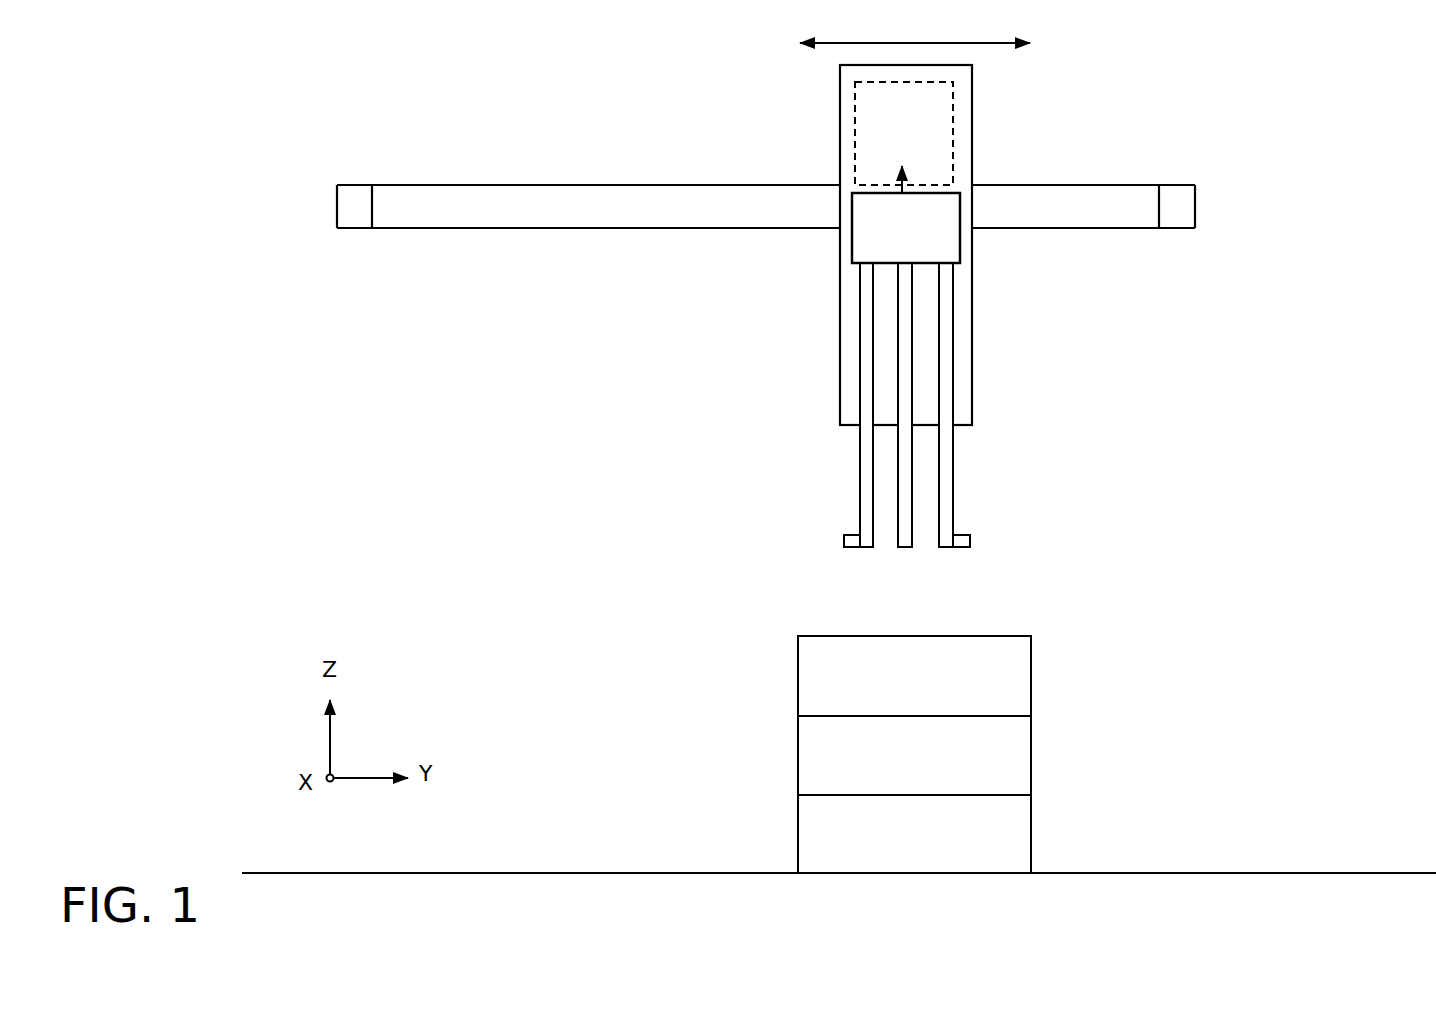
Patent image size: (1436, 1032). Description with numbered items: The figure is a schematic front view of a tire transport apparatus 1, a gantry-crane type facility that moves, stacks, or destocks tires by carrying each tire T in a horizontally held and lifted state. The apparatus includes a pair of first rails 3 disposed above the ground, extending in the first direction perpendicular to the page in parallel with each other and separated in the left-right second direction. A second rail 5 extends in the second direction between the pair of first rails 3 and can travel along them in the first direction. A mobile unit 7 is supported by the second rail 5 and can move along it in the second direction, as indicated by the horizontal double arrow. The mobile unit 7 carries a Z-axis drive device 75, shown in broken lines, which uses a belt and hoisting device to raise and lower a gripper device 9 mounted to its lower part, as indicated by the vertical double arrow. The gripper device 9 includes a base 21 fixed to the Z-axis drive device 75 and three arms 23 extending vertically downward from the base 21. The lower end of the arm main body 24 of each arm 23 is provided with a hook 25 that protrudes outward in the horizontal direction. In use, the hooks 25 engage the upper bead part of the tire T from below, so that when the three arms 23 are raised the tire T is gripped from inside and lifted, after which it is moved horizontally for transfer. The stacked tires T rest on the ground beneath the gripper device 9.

The tire transport apparatus 1 is at (1160, 115).
The first rails 3 is at (360, 200).
The second rail 5 is at (522, 207).
The mobile unit 7 is at (973, 146).
The Z-axis drive device 75 is at (855, 155).
The base 21 is at (950, 238).
The gripper device 9 is at (910, 339).
The arms 23 is at (860, 367).
The arm main body 24 is at (945, 411).
The hook 25 is at (844, 537).
The tire T is at (997, 676).